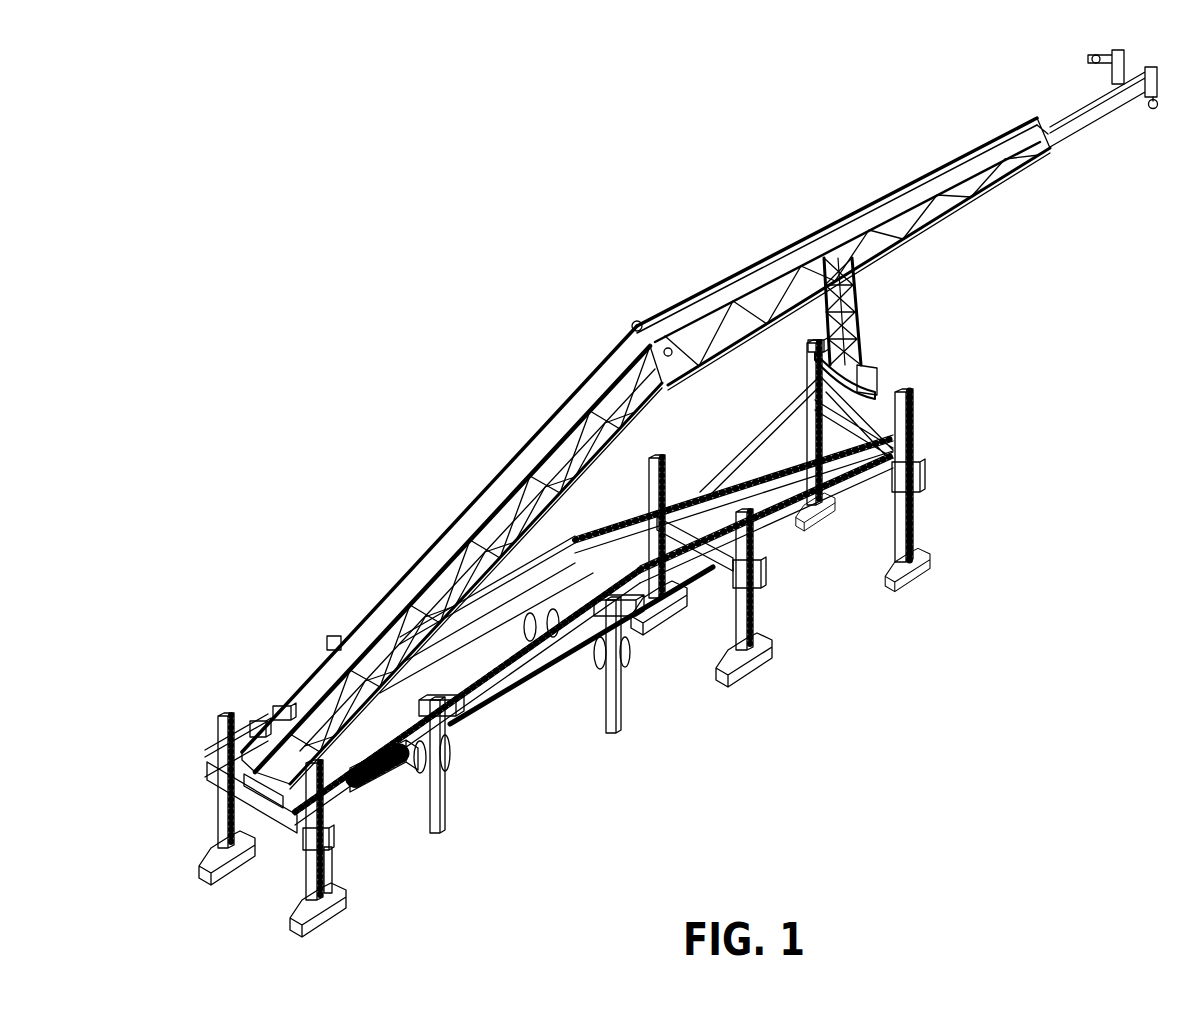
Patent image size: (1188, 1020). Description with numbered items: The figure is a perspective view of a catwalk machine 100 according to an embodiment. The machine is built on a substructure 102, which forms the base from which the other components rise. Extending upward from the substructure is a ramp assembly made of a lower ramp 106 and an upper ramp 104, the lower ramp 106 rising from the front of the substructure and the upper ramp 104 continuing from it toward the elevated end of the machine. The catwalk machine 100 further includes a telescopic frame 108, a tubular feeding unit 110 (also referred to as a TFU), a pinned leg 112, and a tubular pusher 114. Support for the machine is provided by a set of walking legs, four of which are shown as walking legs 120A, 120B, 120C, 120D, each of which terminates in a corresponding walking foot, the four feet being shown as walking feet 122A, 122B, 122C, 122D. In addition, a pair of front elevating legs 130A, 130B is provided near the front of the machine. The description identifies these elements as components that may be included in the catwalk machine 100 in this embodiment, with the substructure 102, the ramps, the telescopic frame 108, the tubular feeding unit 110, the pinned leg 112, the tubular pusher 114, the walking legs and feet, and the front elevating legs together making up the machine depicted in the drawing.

The catwalk machine 100 is at (519, 201).
The substructure 102 is at (332, 793).
The upper ramp 104 is at (878, 198).
The lower ramp 106 is at (578, 412).
The telescopic frame 108 is at (773, 523).
The tubular feeding unit 110 is at (448, 798).
The pinned leg 112 is at (858, 338).
The tubular pusher 114 is at (287, 717).
The walking leg 120A is at (304, 874).
The walking leg 120B is at (218, 810).
The walking leg 120C is at (735, 626).
The walking leg 120D is at (662, 456).
The walking foot 122A is at (326, 912).
The walking foot 122B is at (233, 868).
The walking foot 122C is at (754, 667).
The walking foot 122D is at (665, 620).
The front elevating leg 130A is at (917, 532).
The front elevating leg 130B is at (818, 525).